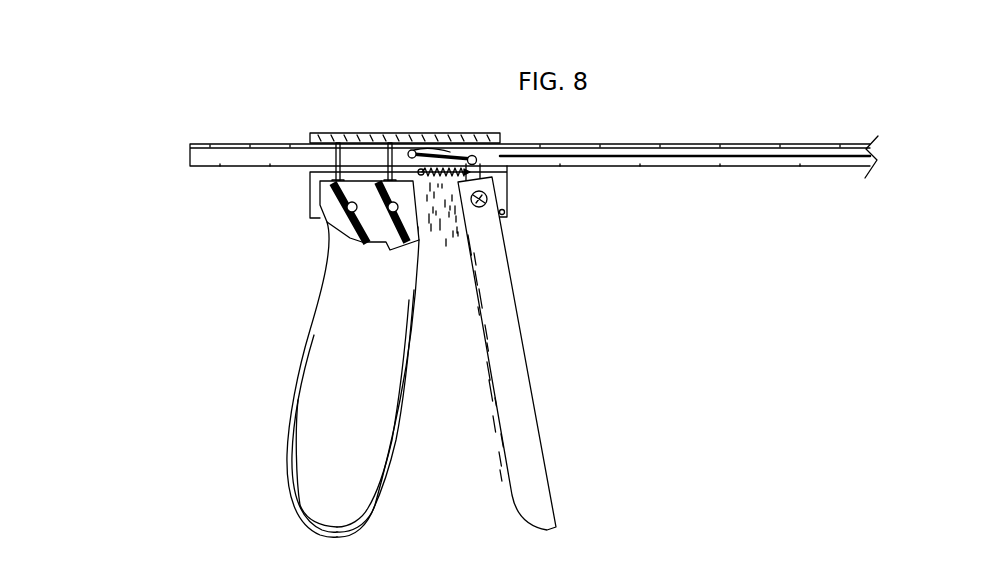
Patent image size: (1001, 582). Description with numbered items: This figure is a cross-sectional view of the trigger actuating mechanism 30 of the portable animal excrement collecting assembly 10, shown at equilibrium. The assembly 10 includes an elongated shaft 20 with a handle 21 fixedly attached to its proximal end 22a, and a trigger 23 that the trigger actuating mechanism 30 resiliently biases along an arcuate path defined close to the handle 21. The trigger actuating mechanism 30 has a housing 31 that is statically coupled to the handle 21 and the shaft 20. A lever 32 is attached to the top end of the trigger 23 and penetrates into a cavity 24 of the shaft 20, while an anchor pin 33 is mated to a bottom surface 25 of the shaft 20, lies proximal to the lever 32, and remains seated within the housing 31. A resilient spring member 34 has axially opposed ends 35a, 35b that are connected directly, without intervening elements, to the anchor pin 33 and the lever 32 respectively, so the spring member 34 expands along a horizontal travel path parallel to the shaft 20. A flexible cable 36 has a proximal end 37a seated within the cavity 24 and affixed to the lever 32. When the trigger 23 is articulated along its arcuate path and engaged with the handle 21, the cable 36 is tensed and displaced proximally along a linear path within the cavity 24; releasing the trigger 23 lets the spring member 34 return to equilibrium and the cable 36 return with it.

The portable animal excrement collecting assembly 10 is at (58, 63).
The elongated shaft 20 is at (720, 119).
The handle 21 is at (376, 450).
The proximal end 22a is at (220, 161).
The trigger 23 is at (517, 391).
The cavity 24 is at (630, 146).
The bottom surface 25 is at (510, 162).
The trigger actuating mechanism 30 is at (447, 322).
The housing 31 is at (326, 134).
The lever 32 is at (474, 155).
The anchor pin 33 is at (413, 150).
The resilient spring member 34 is at (444, 190).
The axially opposed end 35a is at (342, 146).
The axially opposed end 35b is at (505, 172).
The flexible cable 36 is at (789, 155).
The proximal end 37a is at (467, 220).